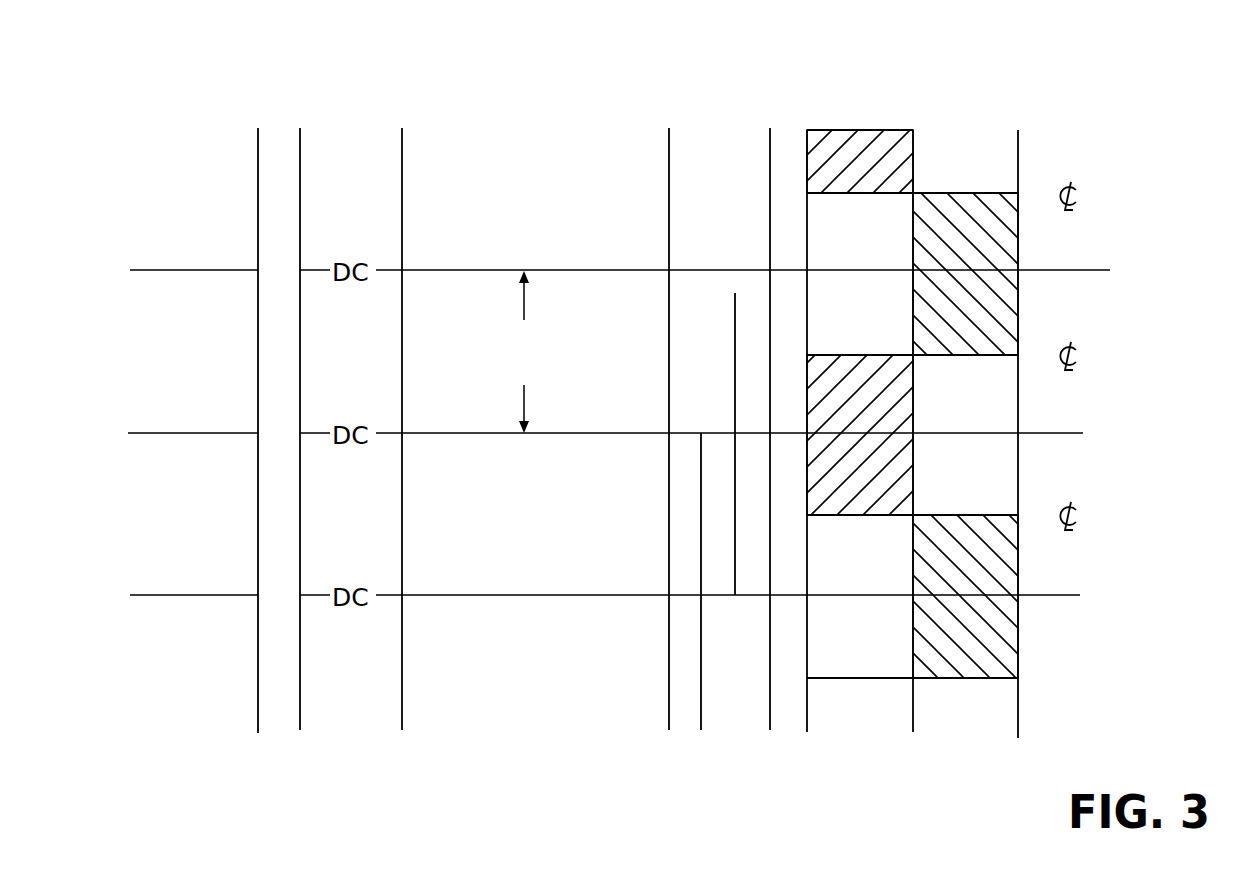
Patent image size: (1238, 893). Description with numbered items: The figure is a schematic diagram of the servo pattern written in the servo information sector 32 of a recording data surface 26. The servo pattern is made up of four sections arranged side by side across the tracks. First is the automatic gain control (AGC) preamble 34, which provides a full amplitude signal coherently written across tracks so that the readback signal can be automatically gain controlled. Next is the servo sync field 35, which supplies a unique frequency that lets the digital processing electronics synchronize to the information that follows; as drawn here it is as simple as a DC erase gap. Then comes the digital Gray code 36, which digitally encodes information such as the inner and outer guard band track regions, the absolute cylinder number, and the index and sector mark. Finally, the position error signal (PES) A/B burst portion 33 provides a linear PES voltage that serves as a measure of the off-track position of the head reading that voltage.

The recording data surface 26 is at (1076, 106).
The servo information sector 32 is at (257, 735).
The position error signal (PES) A/B burst portion 33 is at (807, 108).
The automatic gain control (AGC) preamble 34 is at (285, 119).
The servo sync field 35 is at (366, 121).
The digital Gray code 36 is at (408, 108).